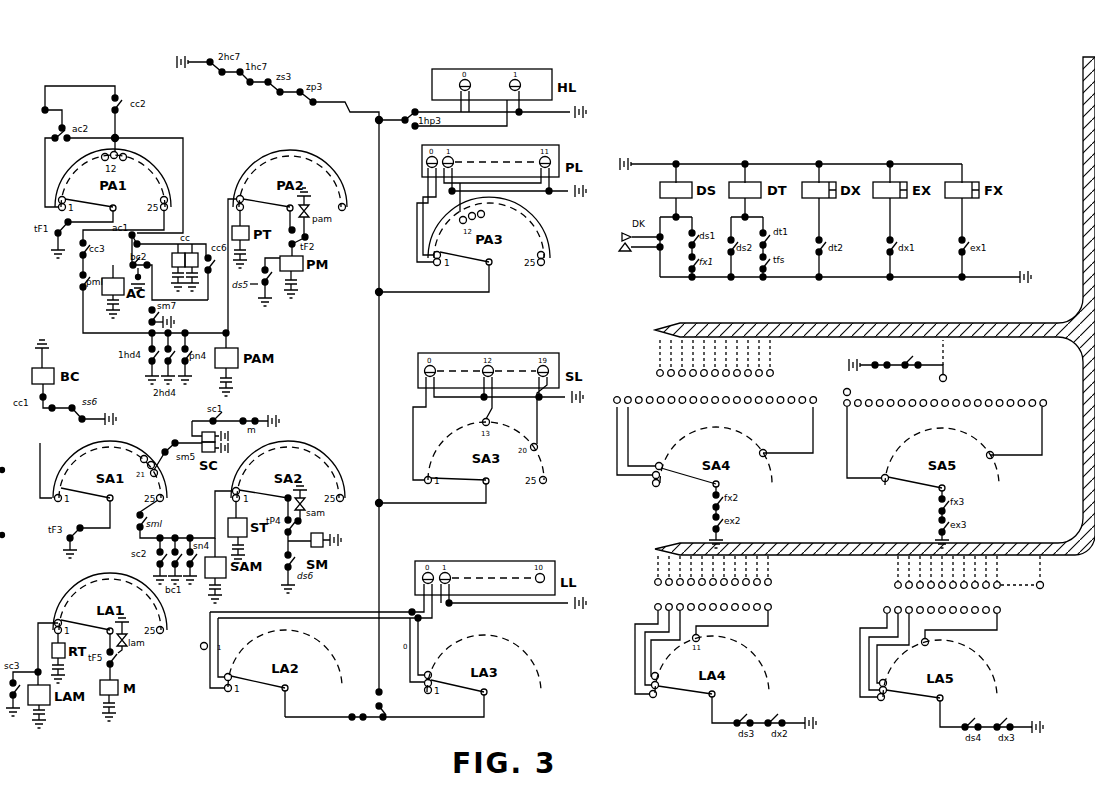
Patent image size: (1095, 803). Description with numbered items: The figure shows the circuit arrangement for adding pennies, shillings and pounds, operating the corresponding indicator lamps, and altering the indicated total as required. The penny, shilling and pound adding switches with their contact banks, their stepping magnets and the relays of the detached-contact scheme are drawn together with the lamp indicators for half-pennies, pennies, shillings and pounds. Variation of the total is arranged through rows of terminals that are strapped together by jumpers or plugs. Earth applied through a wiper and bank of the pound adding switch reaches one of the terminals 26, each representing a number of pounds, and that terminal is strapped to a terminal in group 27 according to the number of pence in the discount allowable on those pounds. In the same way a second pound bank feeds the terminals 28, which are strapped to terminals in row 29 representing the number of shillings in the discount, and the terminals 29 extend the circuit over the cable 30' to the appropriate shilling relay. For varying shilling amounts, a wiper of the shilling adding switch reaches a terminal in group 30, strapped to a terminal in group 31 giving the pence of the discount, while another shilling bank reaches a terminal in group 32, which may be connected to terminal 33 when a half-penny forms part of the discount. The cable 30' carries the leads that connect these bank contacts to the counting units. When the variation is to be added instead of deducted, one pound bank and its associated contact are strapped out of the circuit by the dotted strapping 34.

The terminal group 26 is at (45, 110).
The terminal group 27 is at (703, 577).
The terminal group 28 is at (932, 607).
The terminal group 29 is at (958, 578).
The terminal group 30 is at (706, 398).
The cable 30' is at (875, 306).
The terminal group 31 is at (704, 365).
The terminal group 32 is at (957, 401).
The terminal 33 is at (912, 360).
The dotted strapping 34 is at (40, 443).